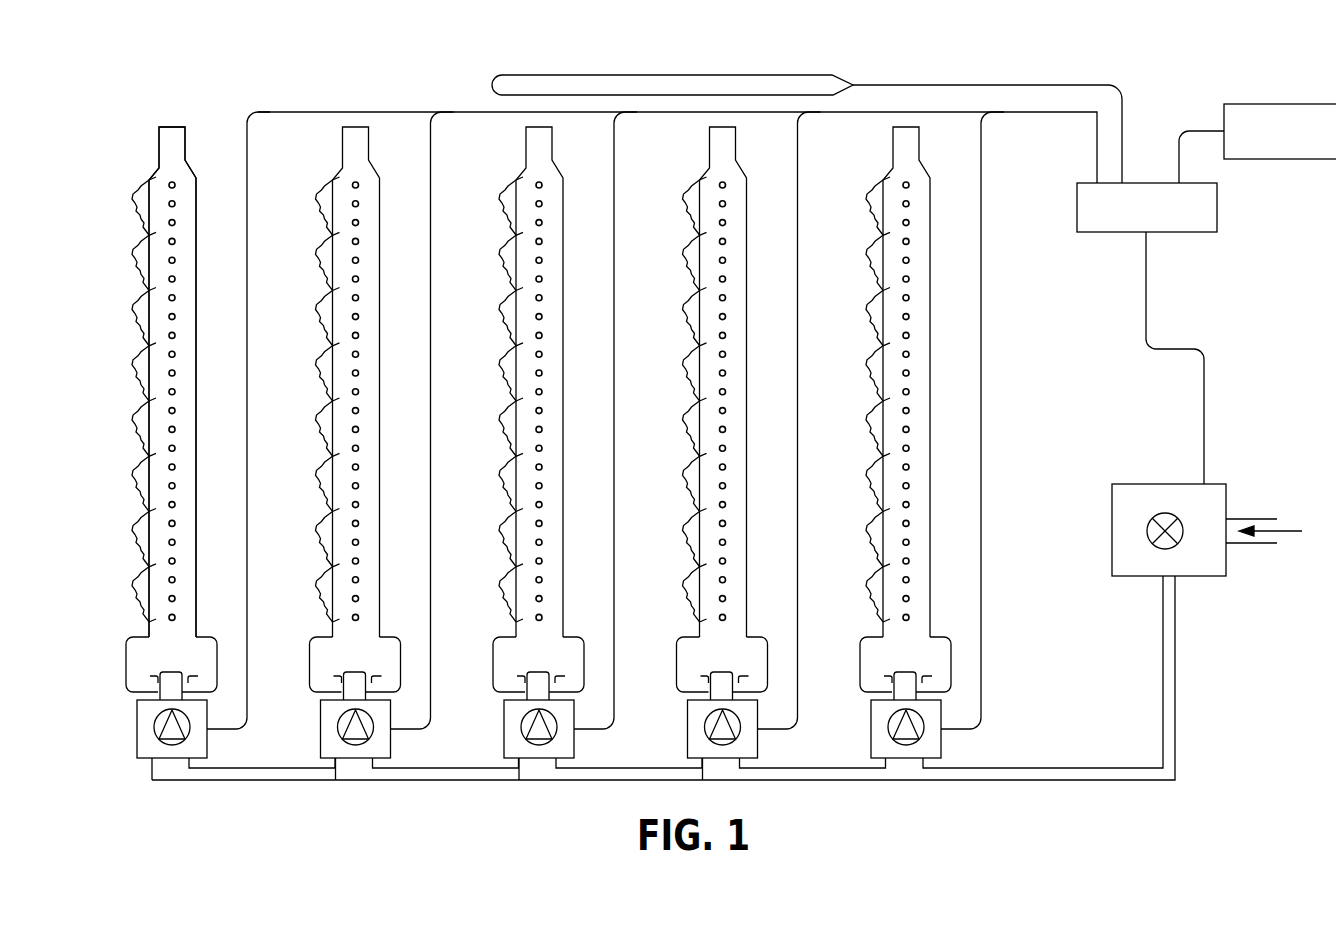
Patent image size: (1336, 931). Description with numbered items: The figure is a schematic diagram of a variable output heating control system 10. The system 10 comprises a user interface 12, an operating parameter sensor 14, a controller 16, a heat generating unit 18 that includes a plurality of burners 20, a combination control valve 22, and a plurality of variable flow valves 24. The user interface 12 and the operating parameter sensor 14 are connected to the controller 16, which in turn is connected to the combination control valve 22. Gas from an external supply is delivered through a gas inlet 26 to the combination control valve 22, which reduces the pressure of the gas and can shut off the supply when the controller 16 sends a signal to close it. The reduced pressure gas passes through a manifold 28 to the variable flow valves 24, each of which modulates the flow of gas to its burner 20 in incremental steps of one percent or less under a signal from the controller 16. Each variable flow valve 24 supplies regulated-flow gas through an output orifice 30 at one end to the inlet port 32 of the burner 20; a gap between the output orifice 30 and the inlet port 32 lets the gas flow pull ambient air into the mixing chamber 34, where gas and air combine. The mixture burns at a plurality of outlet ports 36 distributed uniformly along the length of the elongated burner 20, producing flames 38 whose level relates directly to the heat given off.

The variable output heating control system 10 is at (1102, 53).
The user interface 12 is at (1298, 160).
The operating parameter sensor 14 is at (494, 82).
The controller 16 is at (1193, 232).
The heat generating unit 18 is at (110, 394).
The burner 20 is at (520, 382).
The combination control valve 22 is at (1123, 483).
The variable flow valve 24 is at (507, 729).
The gas inlet 26 is at (1253, 545).
The manifold 28 is at (1173, 742).
The output orifice 30 is at (511, 656).
The inlet port 32 is at (565, 654).
The mixing chamber 34 is at (553, 644).
The outlet ports 36 is at (576, 401).
The flames 38 is at (890, 185).